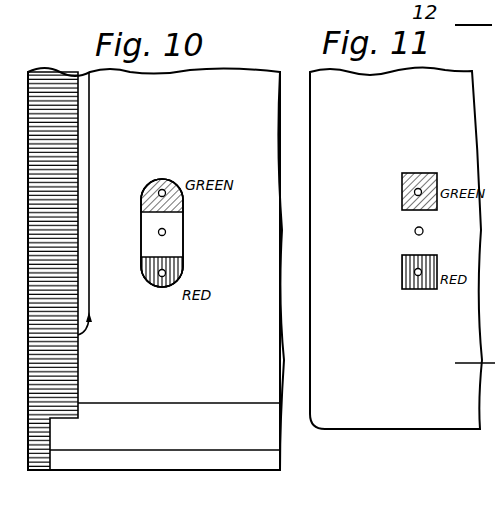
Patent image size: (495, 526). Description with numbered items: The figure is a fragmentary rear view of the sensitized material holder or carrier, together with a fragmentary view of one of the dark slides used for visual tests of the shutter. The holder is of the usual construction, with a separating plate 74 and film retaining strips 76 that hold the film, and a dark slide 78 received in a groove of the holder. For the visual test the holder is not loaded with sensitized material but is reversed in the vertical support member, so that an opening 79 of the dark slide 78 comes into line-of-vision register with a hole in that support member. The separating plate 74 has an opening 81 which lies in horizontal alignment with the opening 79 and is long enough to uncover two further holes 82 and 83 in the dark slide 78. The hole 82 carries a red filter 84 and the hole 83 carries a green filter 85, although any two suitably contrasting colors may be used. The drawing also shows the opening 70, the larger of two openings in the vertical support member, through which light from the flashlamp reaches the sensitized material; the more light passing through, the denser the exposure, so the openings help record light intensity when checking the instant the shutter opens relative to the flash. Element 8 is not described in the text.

In FIG. 10, the frame wall 8 is at (40, 117).
In FIG. 10, the separating plate 74 is at (250, 86).
In FIG. 10, the film retaining strip 76 is at (83, 150).
In FIG. 10, the dark slide 78 is at (148, 244).
In FIG. 10, the opening of separating plate 81 is at (140, 213).
In FIG. 10, the green filter 85 is at (161, 190).
In FIG. 11, the green filter 85 is at (418, 174).
In FIG. 10, the hole 83 is at (169, 195).
In FIG. 11, the hole 83 is at (414, 192).
In FIG. 10, the opening 70 is at (170, 232).
In FIG. 10, the red filter 84 is at (160, 288).
In FIG. 11, the red filter 84 is at (418, 289).
In FIG. 10, the hole 82 is at (168, 271).
In FIG. 11, the hole 82 is at (414, 272).
In FIG. 11, the opening 79 is at (415, 231).